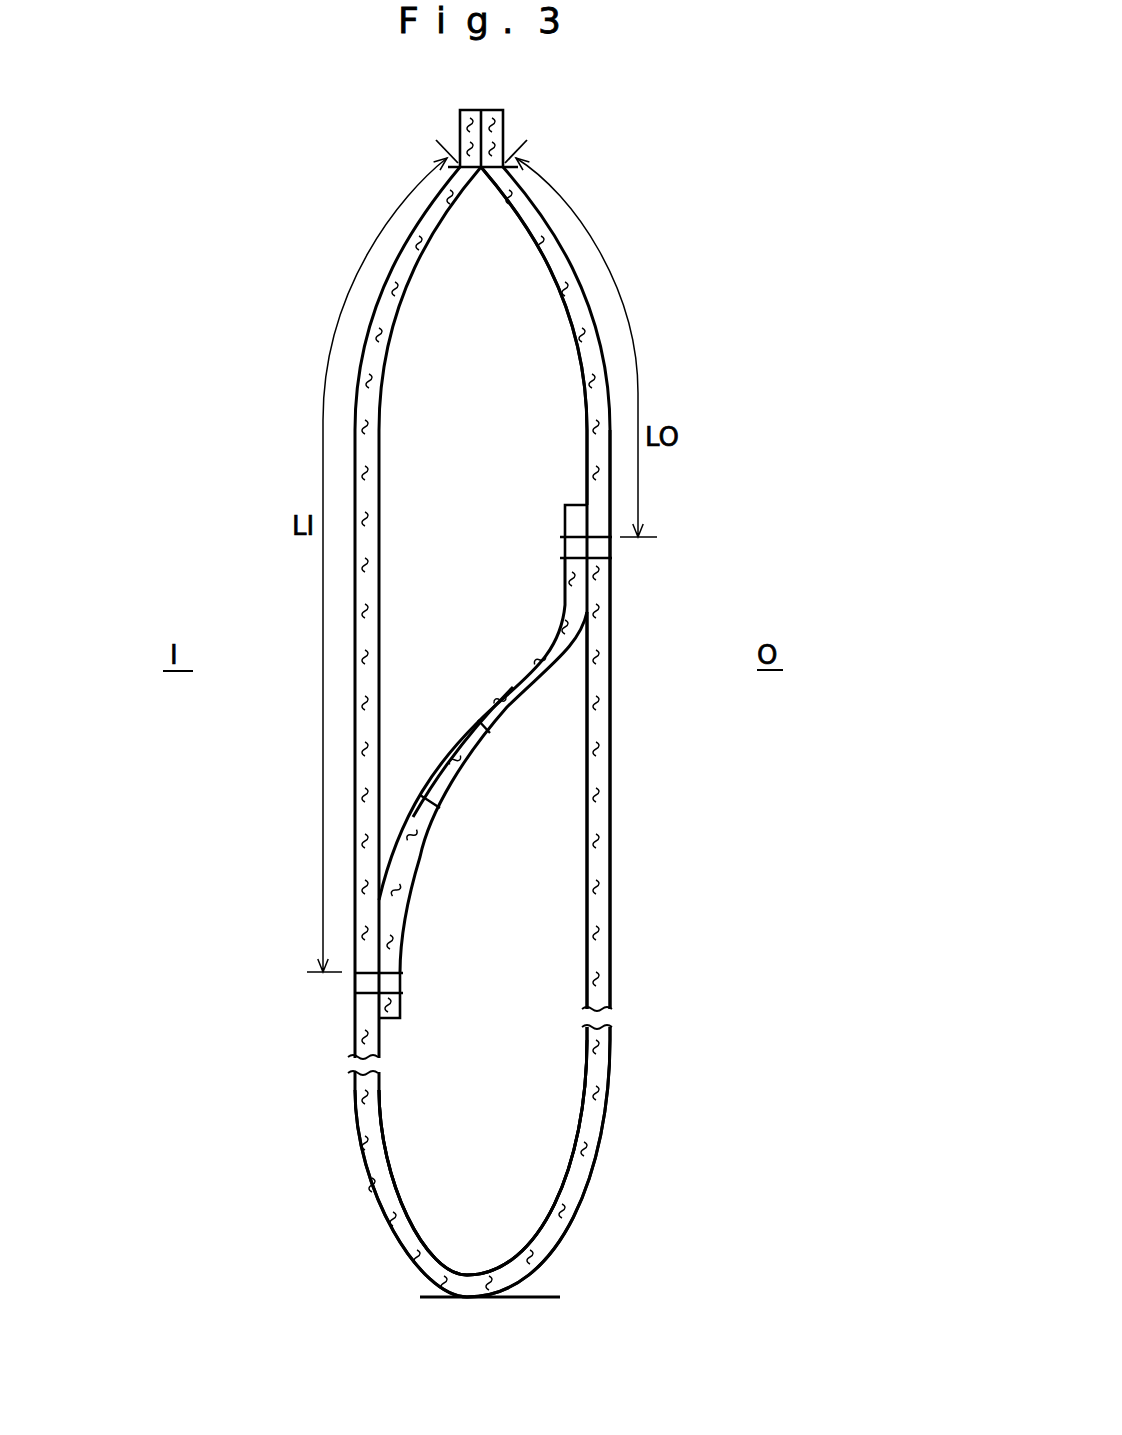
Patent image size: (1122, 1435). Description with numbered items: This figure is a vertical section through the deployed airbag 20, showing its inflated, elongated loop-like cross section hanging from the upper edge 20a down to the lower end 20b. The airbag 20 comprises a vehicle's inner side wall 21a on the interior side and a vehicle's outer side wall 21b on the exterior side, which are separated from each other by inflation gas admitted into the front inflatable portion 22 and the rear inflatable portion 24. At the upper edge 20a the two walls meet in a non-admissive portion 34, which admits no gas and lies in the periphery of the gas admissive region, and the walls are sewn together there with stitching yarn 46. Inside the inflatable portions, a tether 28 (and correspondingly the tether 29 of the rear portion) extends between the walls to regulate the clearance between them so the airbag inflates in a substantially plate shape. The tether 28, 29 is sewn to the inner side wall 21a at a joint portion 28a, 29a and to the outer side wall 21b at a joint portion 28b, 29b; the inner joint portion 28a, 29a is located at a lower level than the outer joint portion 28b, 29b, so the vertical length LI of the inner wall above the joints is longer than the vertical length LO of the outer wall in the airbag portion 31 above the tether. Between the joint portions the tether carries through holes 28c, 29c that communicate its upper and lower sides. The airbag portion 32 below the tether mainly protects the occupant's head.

The airbag 20 is at (242, 292).
The upper edge 20a is at (500, 132).
The lower end portion of belt 20b is at (485, 1297).
The vehicle's inner side wall 21a is at (363, 1047).
The vehicle's outer side wall 21b is at (595, 1067).
The front inflatable portion 22 is at (709, 735).
The rear inflatable portion 24 is at (647, 843).
The tether 28 is at (484, 763).
The joint portion 28a is at (431, 1045).
The joint portion 28b is at (549, 483).
The through hole 28c is at (471, 799).
The tether 29 is at (484, 763).
The joint portion 29a is at (400, 1002).
The joint portion 29b is at (568, 523).
The through hole 29c is at (455, 757).
The airbag portion above the tethers 31 is at (540, 372).
The airbag portion below the tethers 32 is at (498, 1152).
The non-admissive portion 34 is at (468, 142).
The stitching yarn 46 is at (507, 152).